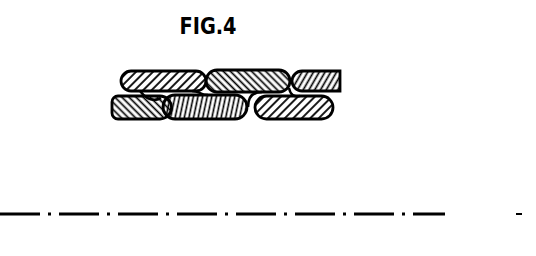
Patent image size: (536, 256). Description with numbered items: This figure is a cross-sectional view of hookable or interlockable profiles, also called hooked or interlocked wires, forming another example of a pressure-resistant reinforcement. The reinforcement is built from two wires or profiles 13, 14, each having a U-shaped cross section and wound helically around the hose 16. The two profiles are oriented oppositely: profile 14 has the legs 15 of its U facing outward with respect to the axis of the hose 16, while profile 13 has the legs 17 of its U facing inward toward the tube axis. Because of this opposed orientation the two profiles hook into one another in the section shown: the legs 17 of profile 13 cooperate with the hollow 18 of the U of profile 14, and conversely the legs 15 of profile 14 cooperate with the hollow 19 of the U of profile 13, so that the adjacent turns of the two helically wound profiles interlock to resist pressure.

The profile 13 is at (147, 72).
The profile 14 is at (182, 121).
The legs 15 is at (260, 121).
The hose 16 is at (413, 213).
The legs 17 is at (294, 70).
The hollow 18 is at (247, 98).
The hollow 19 is at (199, 77).